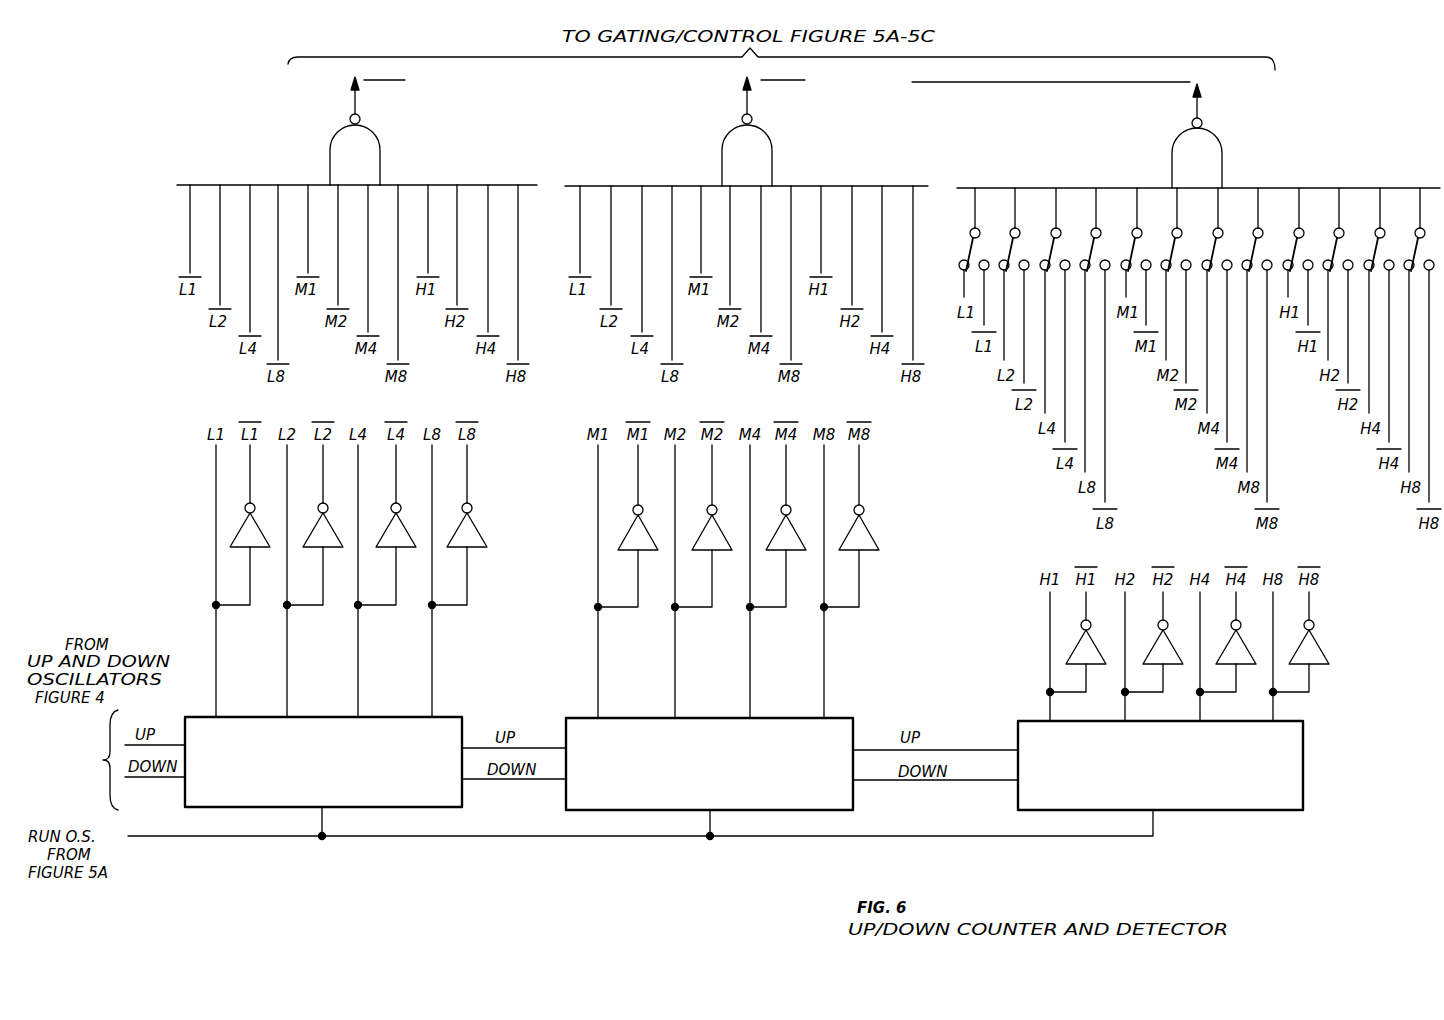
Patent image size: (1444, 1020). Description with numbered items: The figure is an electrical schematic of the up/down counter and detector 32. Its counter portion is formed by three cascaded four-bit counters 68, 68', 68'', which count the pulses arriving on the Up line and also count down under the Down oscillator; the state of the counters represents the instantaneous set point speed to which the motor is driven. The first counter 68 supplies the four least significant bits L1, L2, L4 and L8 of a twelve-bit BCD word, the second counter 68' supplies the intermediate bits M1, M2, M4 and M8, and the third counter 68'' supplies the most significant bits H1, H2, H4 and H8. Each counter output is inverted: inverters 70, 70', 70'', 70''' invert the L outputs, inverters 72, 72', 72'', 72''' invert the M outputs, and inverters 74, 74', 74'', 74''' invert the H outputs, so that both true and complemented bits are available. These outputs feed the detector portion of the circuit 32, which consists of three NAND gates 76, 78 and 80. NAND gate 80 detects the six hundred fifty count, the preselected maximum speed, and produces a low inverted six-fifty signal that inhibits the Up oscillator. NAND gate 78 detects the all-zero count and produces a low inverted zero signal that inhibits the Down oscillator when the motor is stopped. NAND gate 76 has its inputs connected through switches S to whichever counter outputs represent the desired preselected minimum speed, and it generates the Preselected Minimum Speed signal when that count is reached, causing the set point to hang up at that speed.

The up/down counter and detector 32 is at (120, 398).
The four-bit counter 68 is at (340, 750).
The four-bit counter 68' is at (732, 749).
The four-bit counter 68'' is at (1191, 763).
The inverter 70 is at (242, 572).
The inverter 70' is at (314, 572).
The inverter 70'' is at (386, 570).
The inverter 70''' is at (484, 556).
The inverter 72 is at (627, 574).
The inverter 72' is at (702, 574).
The inverter 72'' is at (777, 571).
The inverter 72''' is at (880, 558).
The inverter 74 is at (1077, 670).
The inverter 74' is at (1153, 670).
The inverter 74'' is at (1227, 670).
The inverter 74''' is at (1325, 658).
The NAND gate 76 is at (1212, 148).
The NAND gate 78 is at (762, 142).
The NAND gate 80 is at (371, 142).